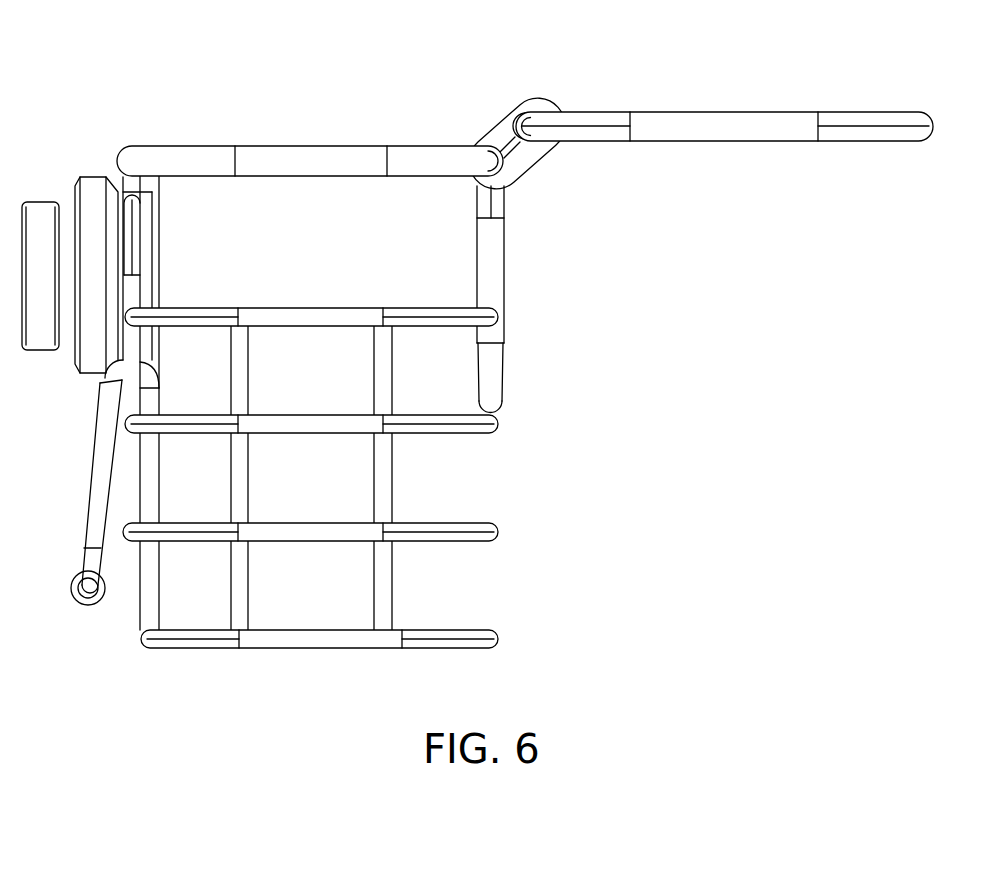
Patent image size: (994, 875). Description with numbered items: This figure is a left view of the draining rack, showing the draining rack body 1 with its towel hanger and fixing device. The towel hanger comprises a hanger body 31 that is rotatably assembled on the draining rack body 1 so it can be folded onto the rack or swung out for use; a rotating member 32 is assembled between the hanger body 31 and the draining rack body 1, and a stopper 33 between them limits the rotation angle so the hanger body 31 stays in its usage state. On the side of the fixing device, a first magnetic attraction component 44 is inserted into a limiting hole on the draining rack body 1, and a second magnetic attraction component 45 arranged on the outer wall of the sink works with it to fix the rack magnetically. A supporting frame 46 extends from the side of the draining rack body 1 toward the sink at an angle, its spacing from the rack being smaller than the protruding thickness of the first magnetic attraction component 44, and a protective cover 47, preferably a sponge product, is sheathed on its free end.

The draining rack body 1 is at (442, 423).
The hanger body 31 is at (708, 127).
The rotating member 32 is at (497, 132).
The stopper 33 is at (552, 108).
The first magnetic attraction component 44 is at (93, 215).
The second magnetic attraction component 45 is at (38, 233).
The supporting frame 46 is at (100, 472).
The protective cover 47 is at (88, 597).